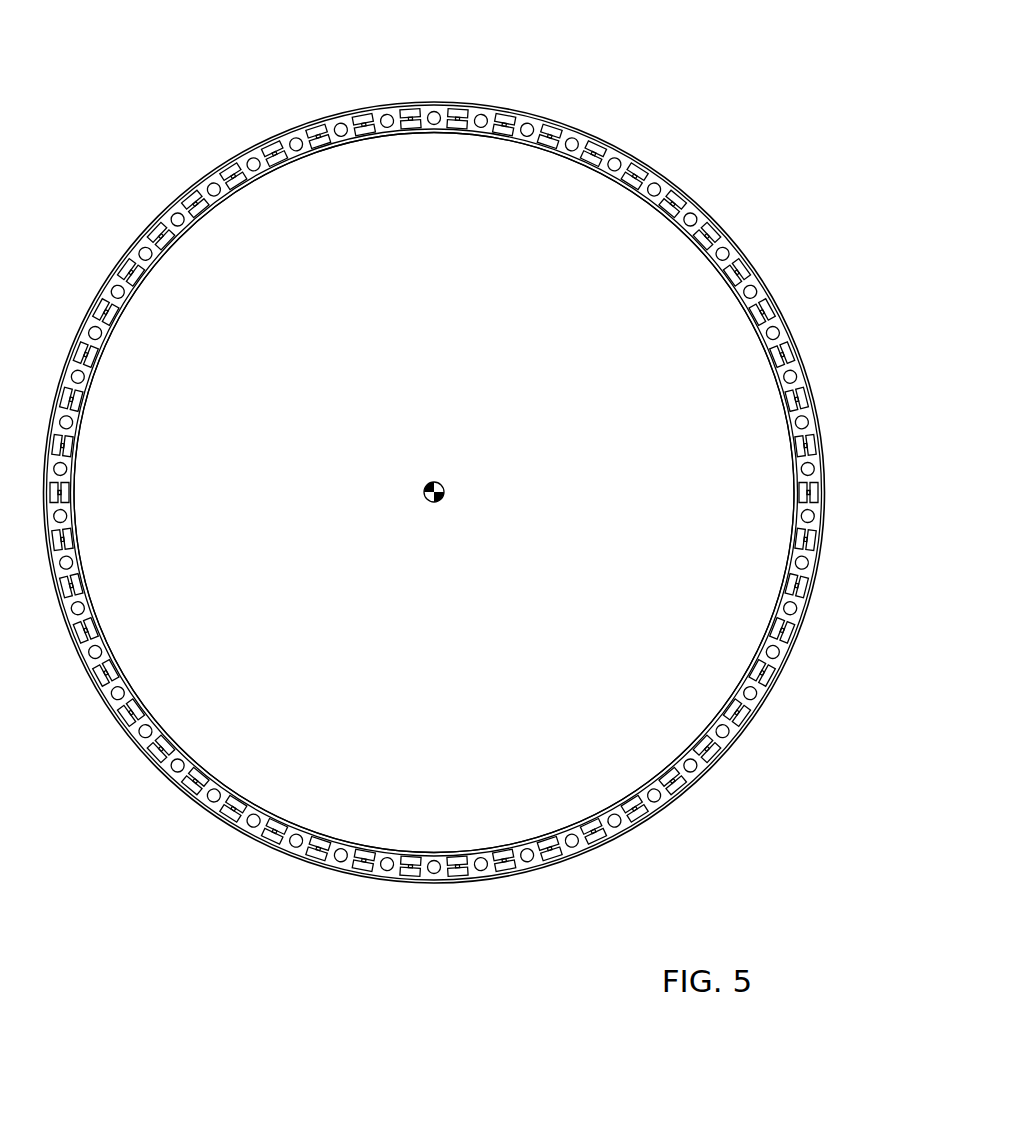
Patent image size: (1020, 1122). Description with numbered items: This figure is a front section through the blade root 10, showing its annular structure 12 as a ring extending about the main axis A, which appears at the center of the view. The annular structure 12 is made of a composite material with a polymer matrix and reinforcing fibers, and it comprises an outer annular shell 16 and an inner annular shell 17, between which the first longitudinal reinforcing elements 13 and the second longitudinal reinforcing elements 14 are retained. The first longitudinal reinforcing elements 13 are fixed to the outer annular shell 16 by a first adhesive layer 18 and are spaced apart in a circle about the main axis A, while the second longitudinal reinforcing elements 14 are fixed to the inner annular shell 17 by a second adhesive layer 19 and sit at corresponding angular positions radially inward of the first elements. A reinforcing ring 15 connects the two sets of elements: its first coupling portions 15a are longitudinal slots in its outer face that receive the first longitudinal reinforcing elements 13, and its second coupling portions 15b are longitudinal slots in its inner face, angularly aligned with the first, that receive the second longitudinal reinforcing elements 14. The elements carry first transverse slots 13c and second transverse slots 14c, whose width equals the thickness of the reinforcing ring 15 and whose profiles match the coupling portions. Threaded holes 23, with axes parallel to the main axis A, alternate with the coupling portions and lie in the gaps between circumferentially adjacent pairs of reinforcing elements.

The blade root 10 is at (688, 108).
The annular structure 12 is at (150, 794).
The first longitudinal reinforcing elements 13 is at (370, 112).
The first transverse slots 13c is at (413, 126).
The second longitudinal reinforcing elements 14 is at (365, 134).
The second transverse slots 14c is at (410, 106).
The reinforcing ring 15 is at (466, 106).
The first coupling portions 15a is at (324, 122).
The second coupling portions 15b is at (345, 141).
The outer annular shell 16 is at (408, 882).
The inner annular shell 17 is at (362, 138).
The first adhesive layer 18 is at (478, 858).
The second adhesive layer 19 is at (428, 128).
The threaded holes 23 is at (567, 153).
The main axis A is at (445, 485).